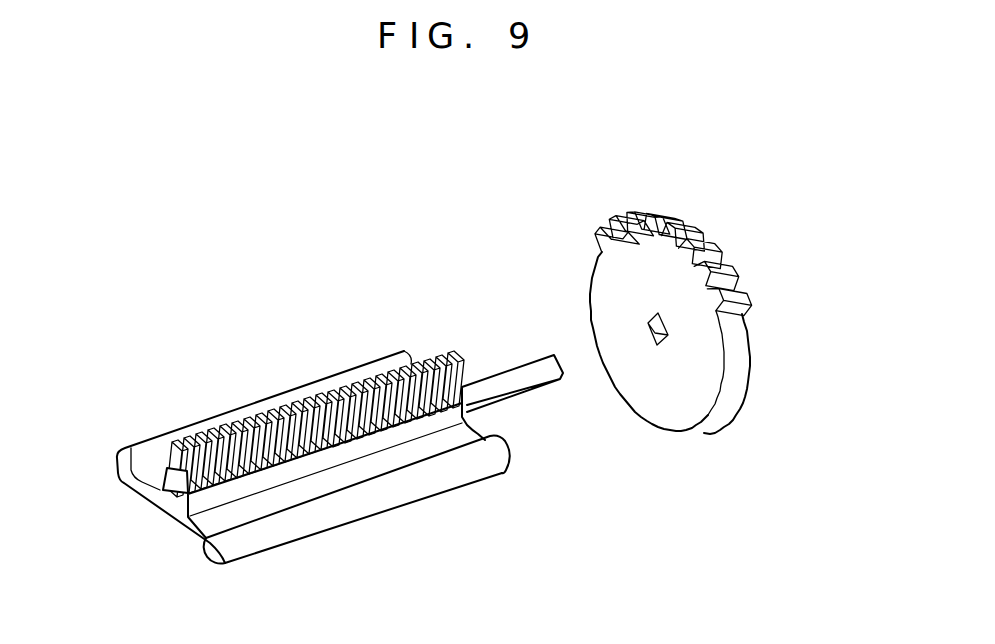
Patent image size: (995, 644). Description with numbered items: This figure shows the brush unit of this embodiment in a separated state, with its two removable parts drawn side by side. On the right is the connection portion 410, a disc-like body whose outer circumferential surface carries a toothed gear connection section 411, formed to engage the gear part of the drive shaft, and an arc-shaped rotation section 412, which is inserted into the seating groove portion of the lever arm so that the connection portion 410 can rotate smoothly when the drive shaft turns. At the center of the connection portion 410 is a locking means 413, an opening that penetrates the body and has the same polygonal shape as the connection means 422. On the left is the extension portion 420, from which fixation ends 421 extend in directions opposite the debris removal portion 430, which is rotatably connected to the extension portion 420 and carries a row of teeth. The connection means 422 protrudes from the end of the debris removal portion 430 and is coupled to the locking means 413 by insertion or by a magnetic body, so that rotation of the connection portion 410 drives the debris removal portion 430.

The connection portion 410 is at (698, 344).
The gear connection section 411 is at (680, 225).
The rotation section 412 is at (737, 383).
The locking means 413 is at (653, 337).
The extension portion 420 is at (313, 420).
The fixation ends 421 is at (152, 446).
The connection means 422 is at (523, 373).
The debris removal portion 430 is at (275, 407).